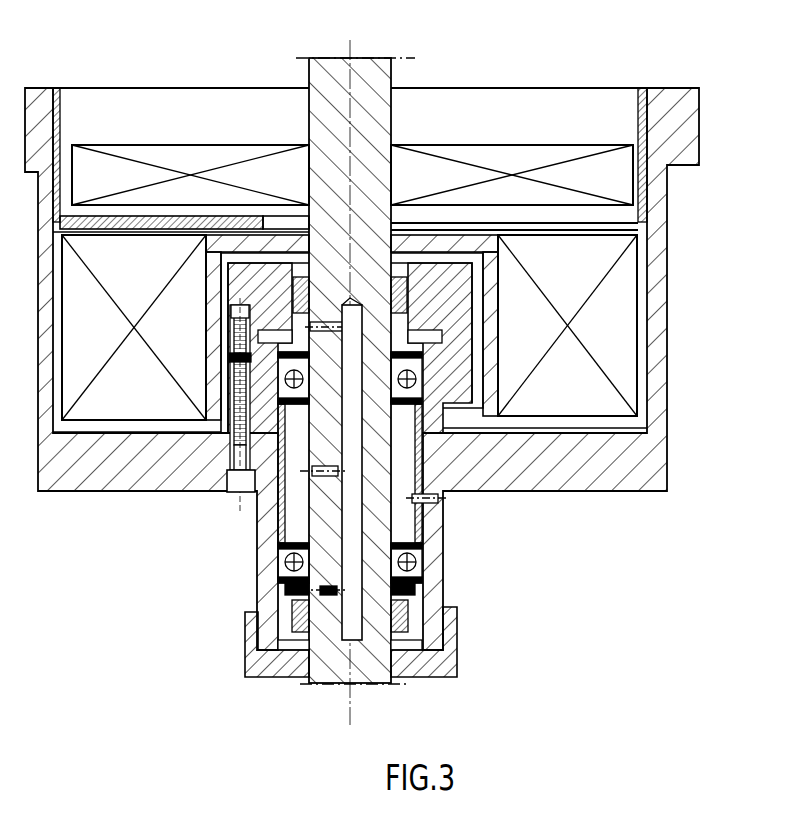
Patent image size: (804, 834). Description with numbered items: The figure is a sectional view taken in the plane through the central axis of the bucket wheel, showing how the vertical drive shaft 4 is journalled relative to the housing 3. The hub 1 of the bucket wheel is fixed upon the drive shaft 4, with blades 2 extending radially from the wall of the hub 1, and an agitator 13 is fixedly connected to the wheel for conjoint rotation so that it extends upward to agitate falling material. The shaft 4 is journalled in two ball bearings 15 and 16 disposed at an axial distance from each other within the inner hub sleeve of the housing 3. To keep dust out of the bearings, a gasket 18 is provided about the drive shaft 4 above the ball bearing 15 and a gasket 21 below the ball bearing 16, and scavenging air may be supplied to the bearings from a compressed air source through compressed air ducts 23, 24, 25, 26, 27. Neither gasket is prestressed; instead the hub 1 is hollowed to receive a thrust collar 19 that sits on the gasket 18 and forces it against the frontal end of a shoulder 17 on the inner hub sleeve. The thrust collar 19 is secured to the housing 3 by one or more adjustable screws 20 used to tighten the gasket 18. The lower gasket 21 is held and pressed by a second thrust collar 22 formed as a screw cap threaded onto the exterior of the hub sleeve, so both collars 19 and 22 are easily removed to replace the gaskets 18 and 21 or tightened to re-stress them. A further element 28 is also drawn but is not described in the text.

The hub 1 is at (480, 238).
The blades 2 is at (615, 330).
The housing 3 is at (642, 460).
The drive shaft 4 is at (370, 67).
The agitator 13 is at (150, 147).
The ball bearing 15 is at (480, 393).
The ball bearing 16 is at (425, 572).
The shoulder 17 is at (435, 355).
The gasket 18 is at (403, 302).
The thrust collar 19 is at (463, 273).
The screws 20 is at (235, 485).
The gasket 21 is at (450, 607).
The second thrust collar 22 is at (450, 635).
The compressed air duct 23 is at (440, 500).
The compressed air duct 24 is at (250, 508).
The compressed air duct 25 is at (290, 628).
The compressed air duct 26 is at (347, 602).
The compressed air duct 27 is at (274, 300).
The liner 28 is at (645, 82).